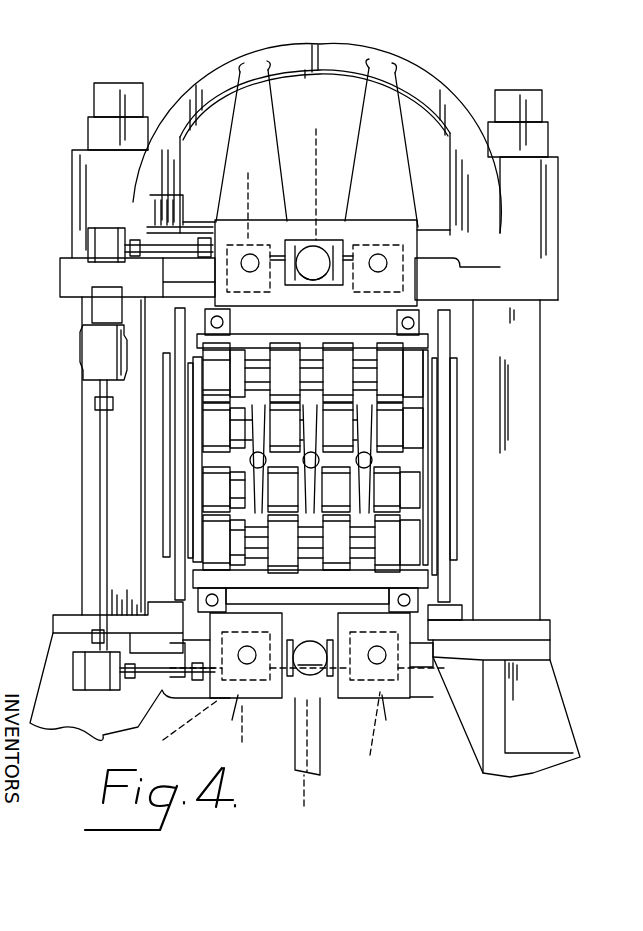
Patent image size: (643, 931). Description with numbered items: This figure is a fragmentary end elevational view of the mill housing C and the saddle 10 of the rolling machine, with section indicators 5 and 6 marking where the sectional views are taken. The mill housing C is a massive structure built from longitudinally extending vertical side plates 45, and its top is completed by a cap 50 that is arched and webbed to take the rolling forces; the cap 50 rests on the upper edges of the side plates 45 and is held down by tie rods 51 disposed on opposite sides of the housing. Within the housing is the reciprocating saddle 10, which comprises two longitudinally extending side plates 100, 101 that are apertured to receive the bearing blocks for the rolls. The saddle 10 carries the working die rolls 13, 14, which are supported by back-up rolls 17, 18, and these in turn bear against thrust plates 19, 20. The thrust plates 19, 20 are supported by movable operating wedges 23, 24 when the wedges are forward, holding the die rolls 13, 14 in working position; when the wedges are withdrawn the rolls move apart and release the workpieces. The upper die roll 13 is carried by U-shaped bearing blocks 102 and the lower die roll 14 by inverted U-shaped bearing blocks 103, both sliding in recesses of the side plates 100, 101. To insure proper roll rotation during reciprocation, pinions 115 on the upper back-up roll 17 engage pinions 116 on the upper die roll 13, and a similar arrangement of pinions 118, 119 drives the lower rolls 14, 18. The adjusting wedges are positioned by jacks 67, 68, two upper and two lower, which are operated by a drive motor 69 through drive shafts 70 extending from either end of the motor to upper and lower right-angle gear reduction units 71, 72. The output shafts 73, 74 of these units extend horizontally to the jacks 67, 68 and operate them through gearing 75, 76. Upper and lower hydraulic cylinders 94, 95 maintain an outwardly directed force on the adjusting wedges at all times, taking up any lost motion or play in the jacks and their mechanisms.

The mill housing C is at (191, 35).
The saddle 10 is at (95, 470).
The die roll 13 is at (389, 459).
The die roll 14 is at (367, 489).
The back-up roll 17 is at (368, 419).
The back-up roll 18 is at (367, 461).
The thrust plate 19 is at (401, 372).
The thrust plate 20 is at (358, 591).
The operating wedge 23 is at (323, 317).
The operating wedge 24 is at (307, 611).
The side plate 45 is at (315, 385).
The cap 50 is at (317, 139).
The tie rod 51 is at (309, 120).
The jack 67 is at (315, 244).
The jack 68 is at (308, 678).
The drive motor 69 is at (78, 487).
The drive shaft 70 is at (286, 348).
The right-angle gear reduction unit 71 is at (71, 238).
The right-angle gear reduction unit 72 is at (112, 667).
The output shaft 73 is at (157, 221).
The output shaft 74 is at (305, 683).
The gearing 75 is at (316, 248).
The gearing 76 is at (256, 731).
The hydraulic cylinder 94 is at (315, 229).
The hydraulic cylinder 95 is at (321, 707).
The side plate 100 is at (101, 305).
The side plate 101 is at (391, 455).
The bearing block 102 is at (357, 456).
The bearing block 103 is at (313, 488).
The pinion 115 is at (190, 356).
The pinion 116 is at (177, 440).
The pinion 118 is at (137, 542).
The pinion 119 is at (177, 487).
The section line 5 is at (286, 470).
The section line 6 is at (219, 460).